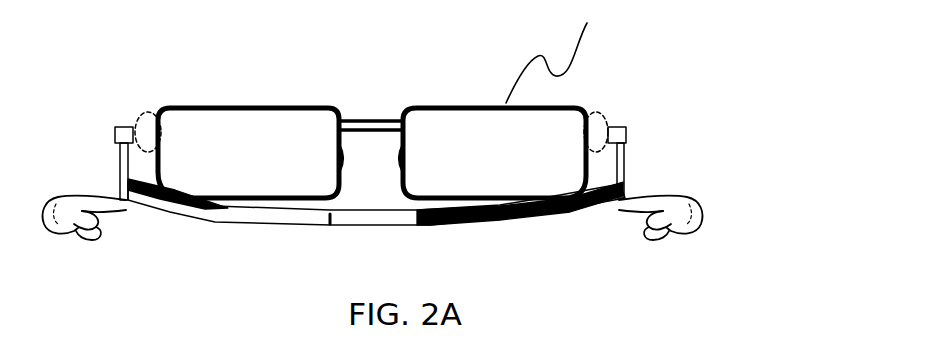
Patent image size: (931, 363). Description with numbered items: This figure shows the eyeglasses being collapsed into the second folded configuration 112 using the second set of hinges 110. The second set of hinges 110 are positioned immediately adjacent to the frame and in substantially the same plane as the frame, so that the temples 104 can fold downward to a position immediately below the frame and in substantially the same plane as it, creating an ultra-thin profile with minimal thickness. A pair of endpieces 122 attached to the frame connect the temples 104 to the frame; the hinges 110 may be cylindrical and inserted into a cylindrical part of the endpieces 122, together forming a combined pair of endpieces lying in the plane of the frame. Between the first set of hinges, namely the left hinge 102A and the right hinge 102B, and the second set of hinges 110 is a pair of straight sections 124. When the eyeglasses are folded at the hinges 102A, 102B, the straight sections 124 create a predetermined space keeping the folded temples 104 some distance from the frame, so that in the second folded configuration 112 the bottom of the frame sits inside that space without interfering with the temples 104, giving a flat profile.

The left hinge 102A is at (130, 205).
The right hinge 102B is at (608, 208).
The temples 104 is at (468, 215).
The second set of hinges 110 is at (626, 137).
The second folded configuration 112 is at (395, 100).
The endpieces 122 is at (148, 115).
The straight sections 124 is at (117, 166).